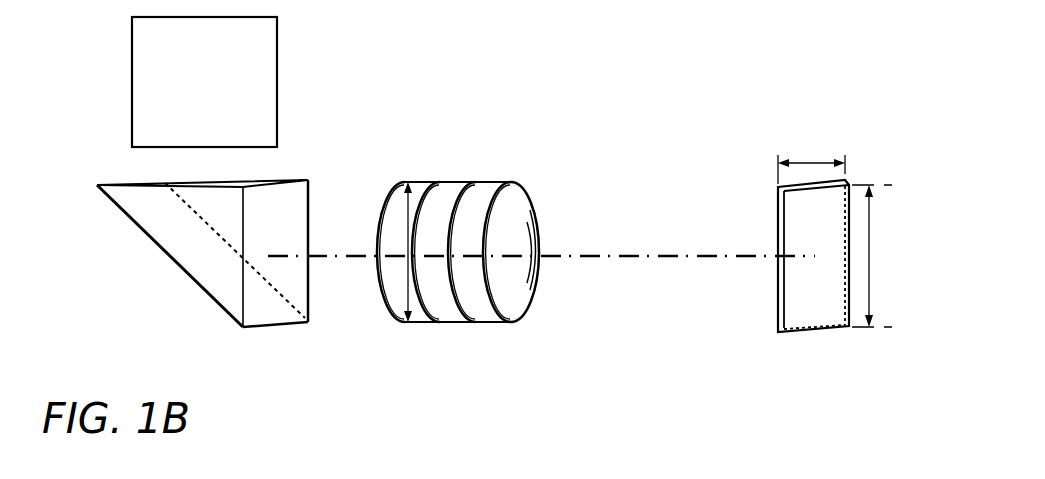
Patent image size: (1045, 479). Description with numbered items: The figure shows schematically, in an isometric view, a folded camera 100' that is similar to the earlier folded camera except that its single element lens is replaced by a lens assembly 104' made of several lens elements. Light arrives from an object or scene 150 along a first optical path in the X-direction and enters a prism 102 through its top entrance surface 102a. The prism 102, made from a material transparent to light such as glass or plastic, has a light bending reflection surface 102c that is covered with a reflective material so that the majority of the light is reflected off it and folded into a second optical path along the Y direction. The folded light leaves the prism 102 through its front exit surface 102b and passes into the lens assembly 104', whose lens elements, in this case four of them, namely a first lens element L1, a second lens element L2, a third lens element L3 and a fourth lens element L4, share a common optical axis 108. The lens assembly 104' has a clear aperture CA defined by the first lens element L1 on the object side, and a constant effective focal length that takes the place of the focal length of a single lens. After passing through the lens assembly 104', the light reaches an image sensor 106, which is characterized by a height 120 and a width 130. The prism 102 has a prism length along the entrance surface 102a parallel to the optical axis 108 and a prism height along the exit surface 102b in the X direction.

The folded camera 100' is at (529, 12).
The object or scene 150 is at (229, 127).
The prism 102 is at (158, 244).
The top (entrance) surface 102a is at (166, 183).
The front (exit) surface 102b is at (308, 223).
The light bending surface (reflection surface) 102c is at (221, 306).
The optical axis 108 is at (608, 256).
The lens assembly 104' is at (460, 277).
The first lens element L1 is at (398, 182).
The second lens element L2 is at (441, 182).
The third lens element L3 is at (478, 182).
The fourth lens element L4 is at (519, 182).
The clear aperture CA is at (407, 298).
The image sensor 106 is at (778, 222).
The width 130 is at (813, 158).
The height 120 is at (873, 264).